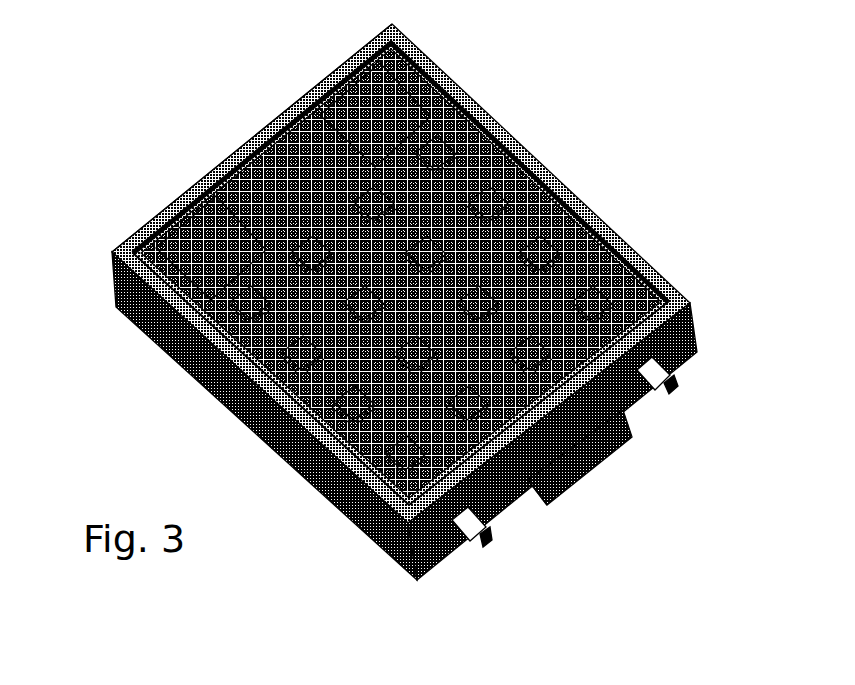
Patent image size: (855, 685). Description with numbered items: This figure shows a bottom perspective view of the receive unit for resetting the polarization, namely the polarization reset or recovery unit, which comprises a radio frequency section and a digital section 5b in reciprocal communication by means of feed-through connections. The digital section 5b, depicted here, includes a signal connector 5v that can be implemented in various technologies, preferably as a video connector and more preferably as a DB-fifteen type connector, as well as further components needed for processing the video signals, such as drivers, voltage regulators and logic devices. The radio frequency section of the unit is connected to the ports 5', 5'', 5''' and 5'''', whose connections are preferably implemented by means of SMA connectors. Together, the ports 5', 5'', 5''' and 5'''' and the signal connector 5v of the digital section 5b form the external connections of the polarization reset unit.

The port 5' is at (182, 189).
The port 5'' is at (322, 79).
The port 5''' is at (486, 556).
The port 5'''' is at (673, 407).
The signal connector 5v is at (580, 470).
The digital section 5b is at (572, 274).